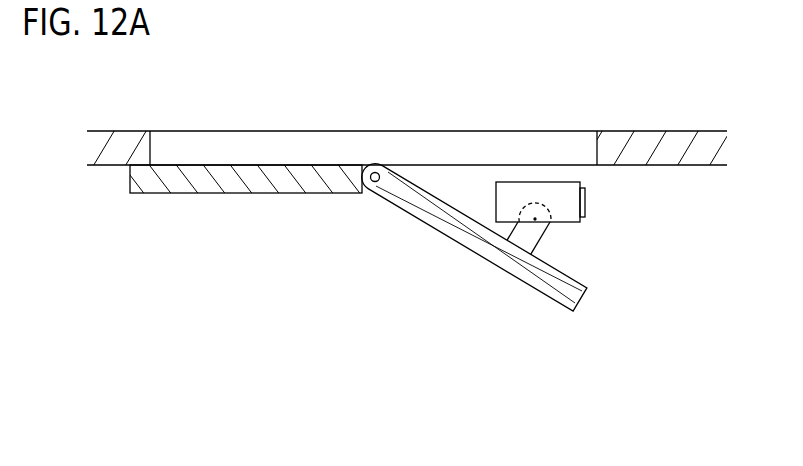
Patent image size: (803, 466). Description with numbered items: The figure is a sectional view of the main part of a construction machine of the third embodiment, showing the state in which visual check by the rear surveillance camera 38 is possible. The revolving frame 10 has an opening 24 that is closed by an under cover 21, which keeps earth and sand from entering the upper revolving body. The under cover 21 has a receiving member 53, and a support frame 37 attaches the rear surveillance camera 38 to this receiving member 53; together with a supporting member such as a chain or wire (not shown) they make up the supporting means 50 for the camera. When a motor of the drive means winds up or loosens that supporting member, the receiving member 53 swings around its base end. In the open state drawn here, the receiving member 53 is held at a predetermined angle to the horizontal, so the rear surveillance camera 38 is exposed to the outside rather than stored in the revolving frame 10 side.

The revolving frame 10 is at (692, 165).
The under cover 21 is at (328, 194).
The opening 24 is at (597, 143).
The support frame 37 is at (535, 236).
The rear surveillance camera 38 is at (528, 182).
The supporting means 50 is at (604, 302).
The receiving member 53 is at (470, 254).